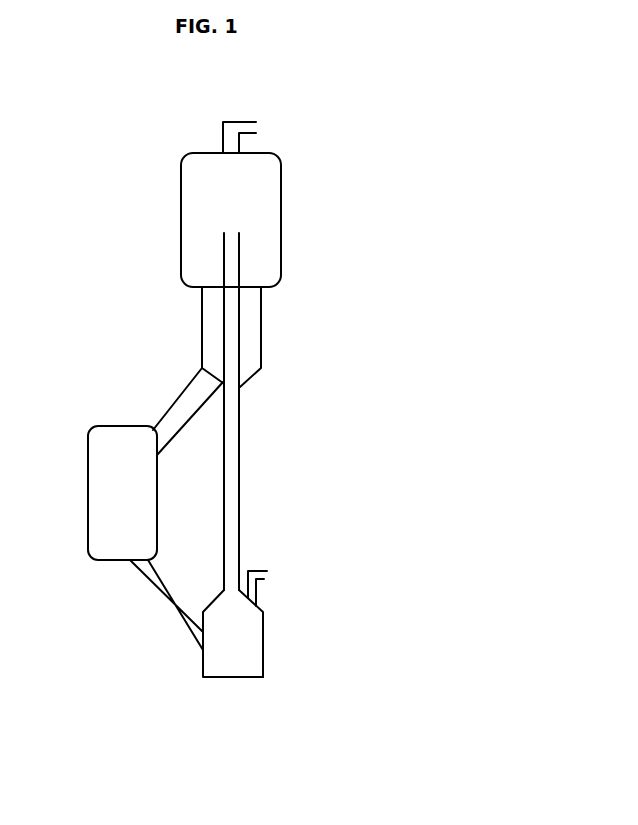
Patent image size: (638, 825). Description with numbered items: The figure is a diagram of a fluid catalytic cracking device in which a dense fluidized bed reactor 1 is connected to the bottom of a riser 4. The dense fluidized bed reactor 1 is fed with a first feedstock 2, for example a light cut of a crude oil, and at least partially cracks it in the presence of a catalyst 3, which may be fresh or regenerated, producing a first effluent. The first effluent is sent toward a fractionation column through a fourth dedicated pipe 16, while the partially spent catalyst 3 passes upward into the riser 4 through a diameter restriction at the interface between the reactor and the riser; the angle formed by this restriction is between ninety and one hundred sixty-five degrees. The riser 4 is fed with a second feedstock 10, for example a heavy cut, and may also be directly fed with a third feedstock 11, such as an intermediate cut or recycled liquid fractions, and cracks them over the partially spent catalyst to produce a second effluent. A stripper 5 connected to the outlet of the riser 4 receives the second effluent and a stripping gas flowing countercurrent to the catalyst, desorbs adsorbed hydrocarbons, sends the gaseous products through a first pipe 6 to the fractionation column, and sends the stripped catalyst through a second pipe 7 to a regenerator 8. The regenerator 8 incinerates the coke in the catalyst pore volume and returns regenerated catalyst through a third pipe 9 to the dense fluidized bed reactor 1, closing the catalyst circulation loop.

The dense fluidized bed reactor 1 is at (212, 678).
The first feedstock 2 is at (266, 664).
The catalyst 3 is at (240, 650).
The riser 4 is at (240, 432).
The stripper 5 is at (262, 312).
The first pipe 6 is at (258, 126).
The second pipe 7 is at (182, 400).
The regenerator 8 is at (100, 427).
The third pipe 9 is at (163, 607).
The second feedstock 10 is at (242, 503).
The third feedstock 11 is at (243, 552).
The fourth dedicated pipe 16 is at (262, 590).